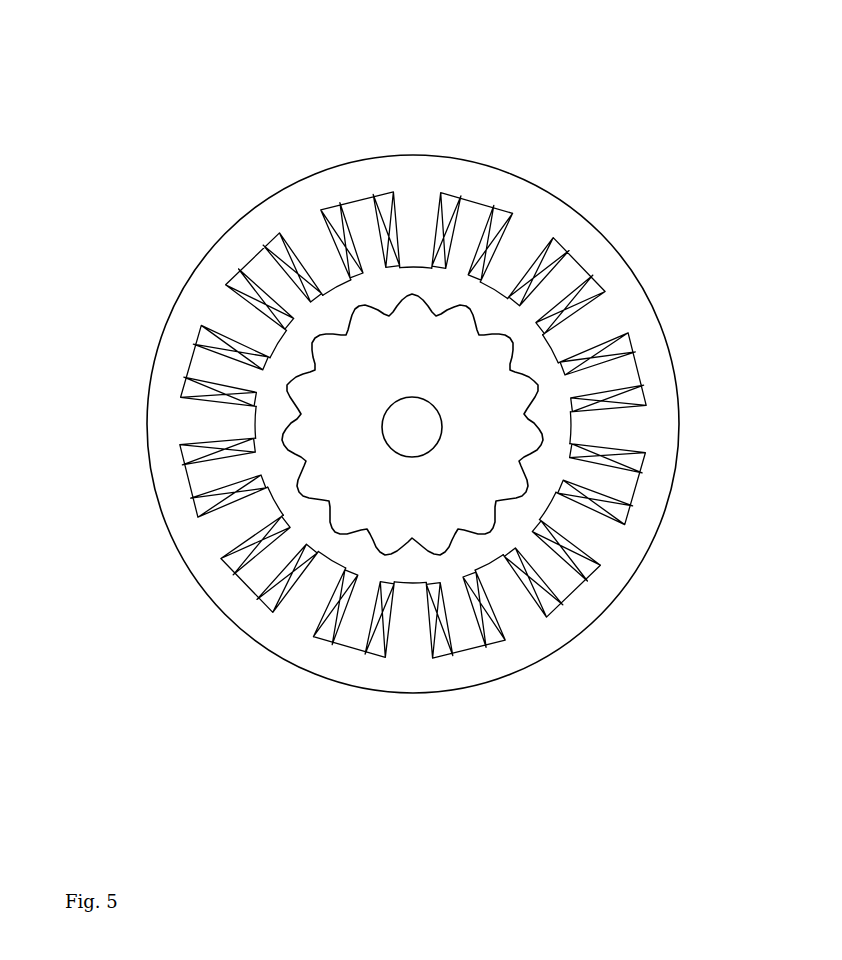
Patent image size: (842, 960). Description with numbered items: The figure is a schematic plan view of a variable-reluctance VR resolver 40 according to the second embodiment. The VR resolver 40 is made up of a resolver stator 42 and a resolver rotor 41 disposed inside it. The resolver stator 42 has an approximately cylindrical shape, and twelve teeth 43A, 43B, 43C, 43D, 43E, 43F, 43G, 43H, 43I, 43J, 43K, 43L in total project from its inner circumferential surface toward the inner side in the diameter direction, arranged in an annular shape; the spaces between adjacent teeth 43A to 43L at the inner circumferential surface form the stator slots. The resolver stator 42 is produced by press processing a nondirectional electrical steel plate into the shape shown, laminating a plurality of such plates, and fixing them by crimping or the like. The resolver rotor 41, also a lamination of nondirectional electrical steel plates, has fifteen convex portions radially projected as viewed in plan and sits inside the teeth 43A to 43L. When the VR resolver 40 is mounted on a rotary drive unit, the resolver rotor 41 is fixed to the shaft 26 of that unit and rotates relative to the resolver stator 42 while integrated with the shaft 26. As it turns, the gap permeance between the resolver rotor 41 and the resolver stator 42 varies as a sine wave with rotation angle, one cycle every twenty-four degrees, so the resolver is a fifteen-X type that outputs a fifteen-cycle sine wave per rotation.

The VR resolver 40 is at (209, 735).
The resolver stator 42 is at (390, 137).
The resolver rotor 41 is at (475, 320).
The shaft 26 is at (437, 447).
The tooth 43A is at (447, 193).
The tooth 43B is at (555, 238).
The tooth 43C is at (630, 337).
The tooth 43D is at (643, 460).
The tooth 43E is at (592, 567).
The tooth 43F is at (492, 640).
The tooth 43G is at (378, 648).
The tooth 43H is at (270, 609).
The tooth 43I is at (197, 514).
The tooth 43J is at (185, 393).
The tooth 43K is at (240, 279).
The tooth 43L is at (324, 207).